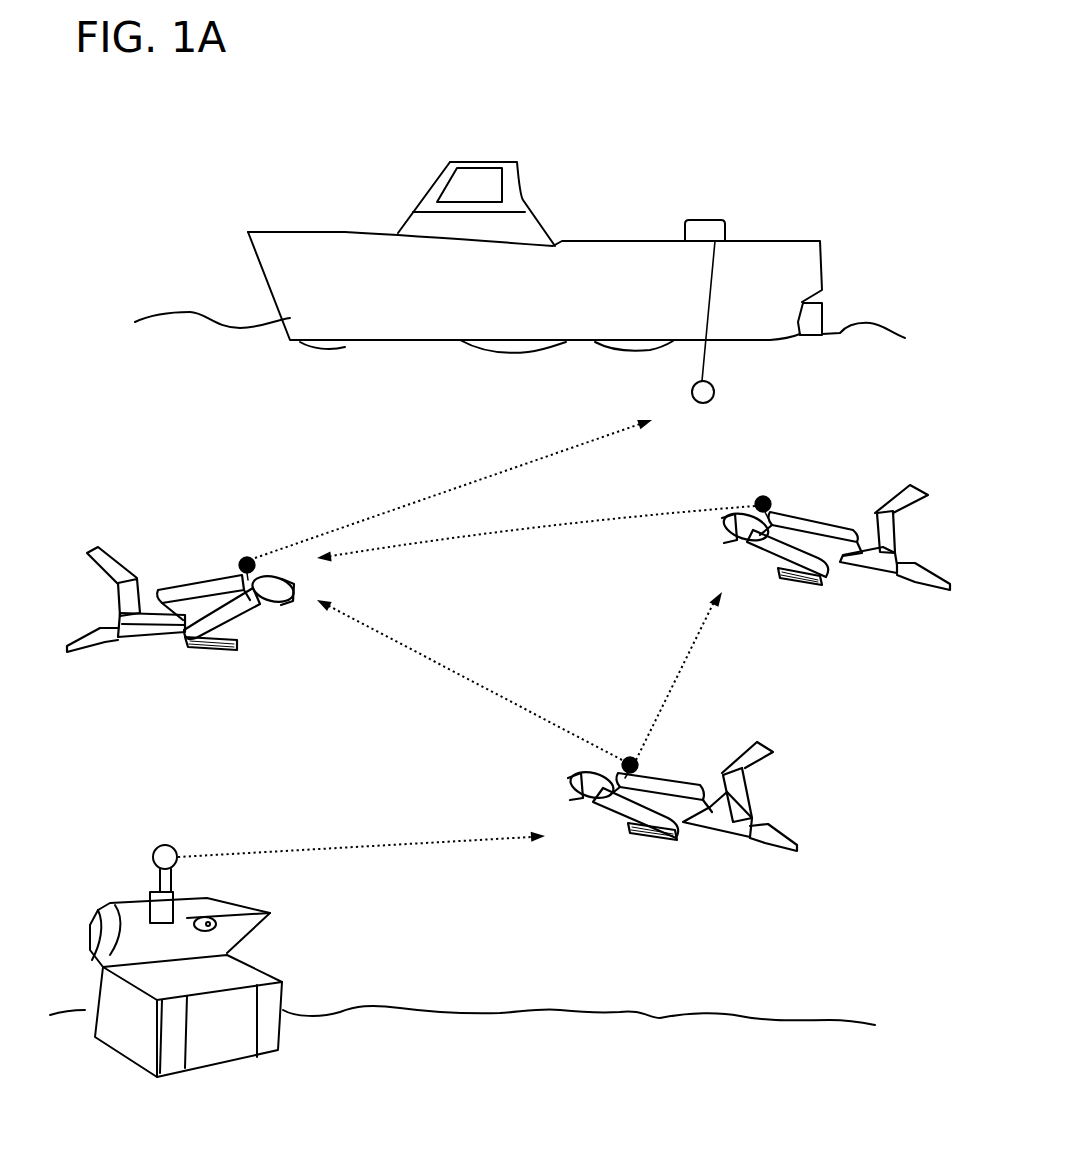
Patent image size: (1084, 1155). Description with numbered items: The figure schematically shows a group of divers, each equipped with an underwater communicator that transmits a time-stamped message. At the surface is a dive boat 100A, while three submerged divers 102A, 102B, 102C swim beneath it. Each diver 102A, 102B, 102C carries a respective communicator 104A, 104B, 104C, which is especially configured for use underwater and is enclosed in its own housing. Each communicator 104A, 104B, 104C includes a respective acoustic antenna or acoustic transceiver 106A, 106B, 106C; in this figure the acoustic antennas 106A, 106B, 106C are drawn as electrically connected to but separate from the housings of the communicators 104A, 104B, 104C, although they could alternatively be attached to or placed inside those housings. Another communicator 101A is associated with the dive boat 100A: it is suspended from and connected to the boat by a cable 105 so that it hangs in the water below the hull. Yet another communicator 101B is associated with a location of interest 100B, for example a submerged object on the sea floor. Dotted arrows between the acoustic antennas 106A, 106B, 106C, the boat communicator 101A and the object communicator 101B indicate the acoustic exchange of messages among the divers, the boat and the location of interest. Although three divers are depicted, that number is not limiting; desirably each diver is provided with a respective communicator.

The dive boat 100A is at (387, 345).
The location of interest 100B is at (287, 987).
The communicator 101A is at (716, 388).
The communicator 101B is at (175, 907).
The diver 102A is at (262, 609).
The diver 102B is at (845, 570).
The diver 102C is at (747, 837).
The communicator 104A is at (207, 651).
The communicator 104B is at (815, 583).
The communicator 104C is at (647, 836).
The cable 105 is at (700, 367).
The acoustic antenna 106A is at (246, 557).
The acoustic antenna 106B is at (763, 496).
The acoustic antenna 106C is at (622, 762).